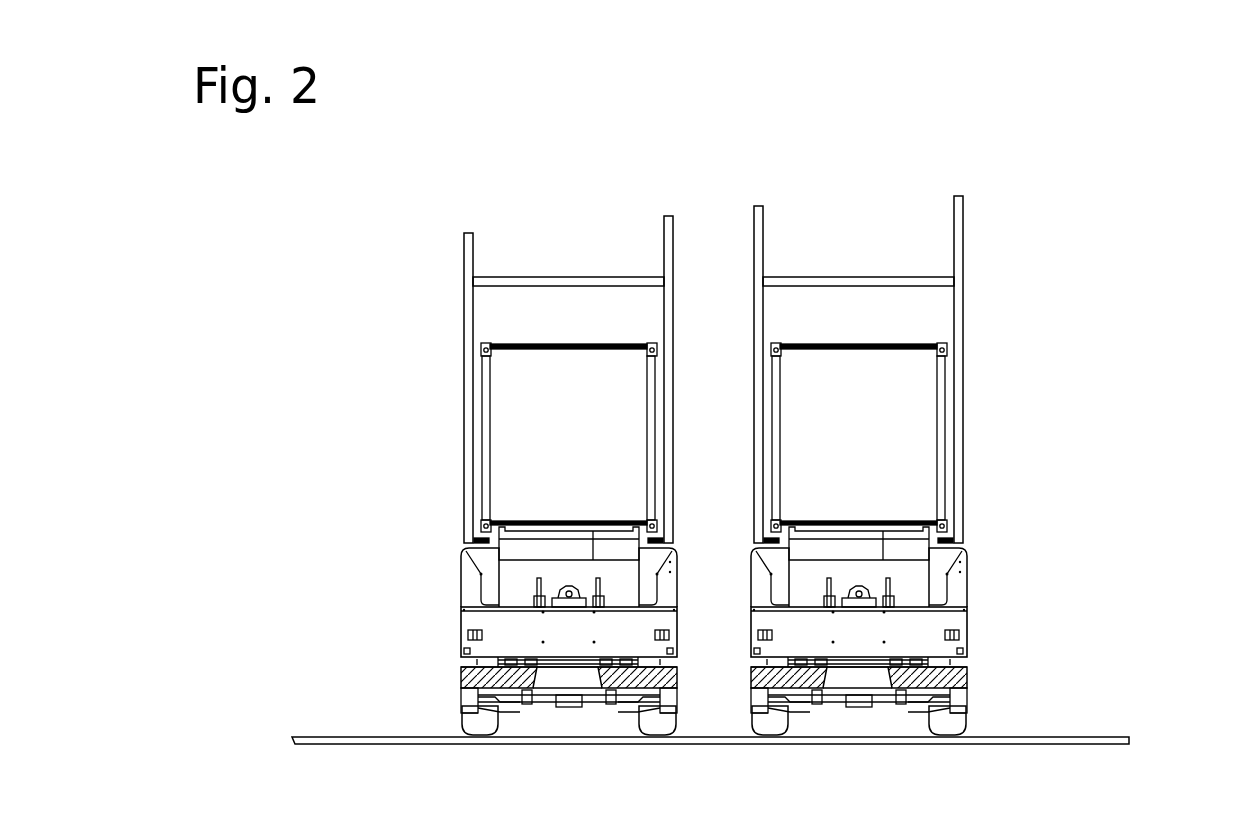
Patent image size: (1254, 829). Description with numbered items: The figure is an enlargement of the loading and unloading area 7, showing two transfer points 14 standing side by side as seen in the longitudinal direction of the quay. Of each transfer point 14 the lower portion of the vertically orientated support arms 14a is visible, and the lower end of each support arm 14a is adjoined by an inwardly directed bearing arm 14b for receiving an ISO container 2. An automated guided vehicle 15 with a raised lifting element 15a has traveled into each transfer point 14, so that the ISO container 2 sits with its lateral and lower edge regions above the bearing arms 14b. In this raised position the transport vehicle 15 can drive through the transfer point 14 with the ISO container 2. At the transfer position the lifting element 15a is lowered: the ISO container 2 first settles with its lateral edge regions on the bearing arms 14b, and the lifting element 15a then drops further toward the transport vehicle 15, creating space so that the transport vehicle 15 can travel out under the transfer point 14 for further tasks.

The loading and unloading area 7 is at (1008, 210).
The transfer point 14 is at (577, 200).
The support arm 14a is at (469, 320).
The bearing arm 14b is at (479, 540).
The ISO container 2 is at (510, 440).
The automated guided vehicle 15 is at (512, 633).
The lifting element 15a is at (553, 551).